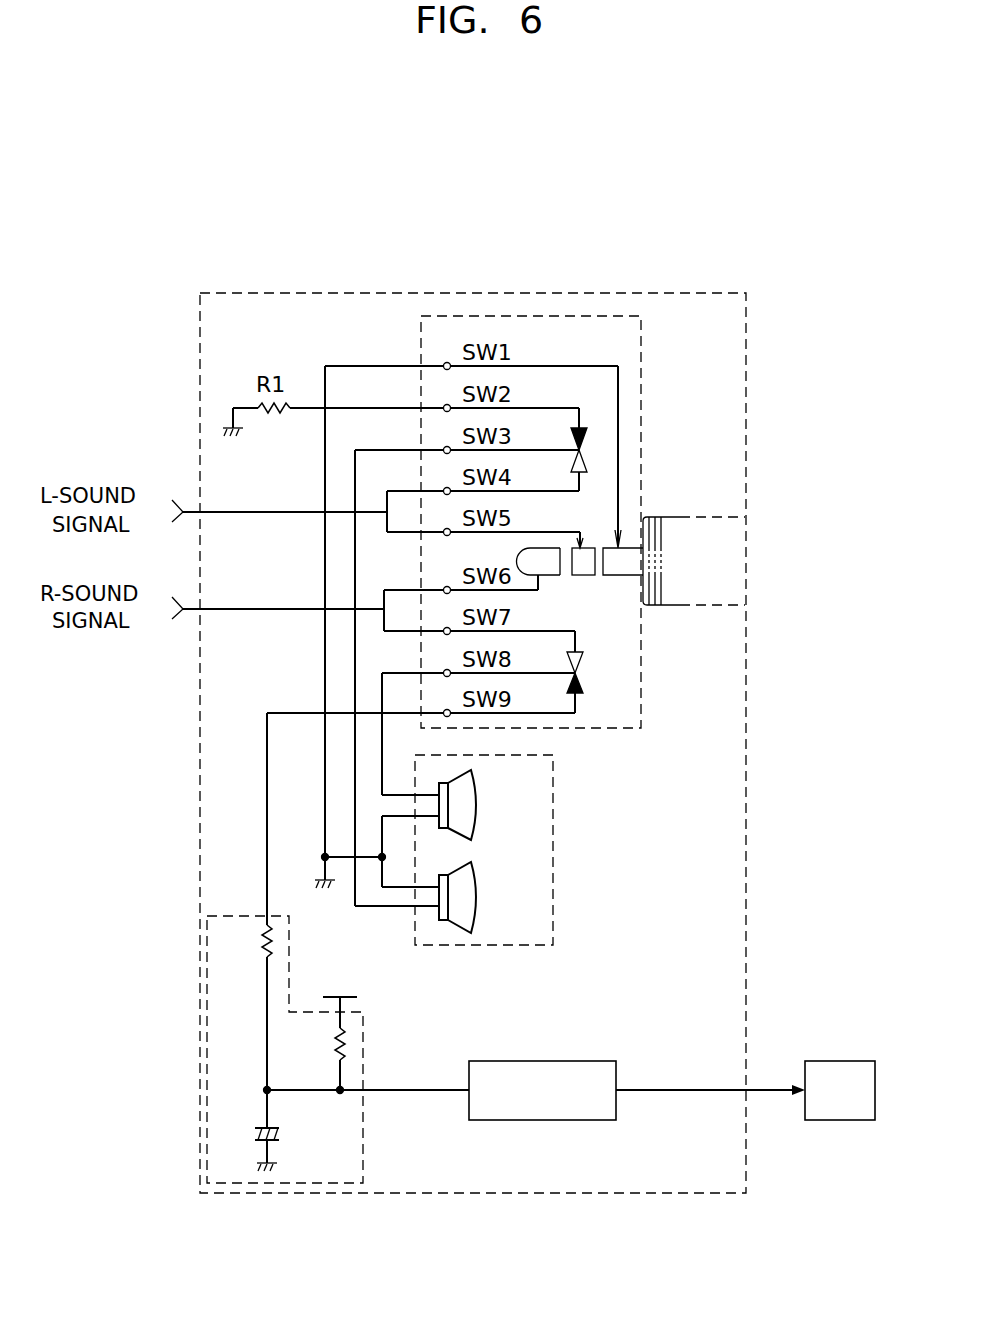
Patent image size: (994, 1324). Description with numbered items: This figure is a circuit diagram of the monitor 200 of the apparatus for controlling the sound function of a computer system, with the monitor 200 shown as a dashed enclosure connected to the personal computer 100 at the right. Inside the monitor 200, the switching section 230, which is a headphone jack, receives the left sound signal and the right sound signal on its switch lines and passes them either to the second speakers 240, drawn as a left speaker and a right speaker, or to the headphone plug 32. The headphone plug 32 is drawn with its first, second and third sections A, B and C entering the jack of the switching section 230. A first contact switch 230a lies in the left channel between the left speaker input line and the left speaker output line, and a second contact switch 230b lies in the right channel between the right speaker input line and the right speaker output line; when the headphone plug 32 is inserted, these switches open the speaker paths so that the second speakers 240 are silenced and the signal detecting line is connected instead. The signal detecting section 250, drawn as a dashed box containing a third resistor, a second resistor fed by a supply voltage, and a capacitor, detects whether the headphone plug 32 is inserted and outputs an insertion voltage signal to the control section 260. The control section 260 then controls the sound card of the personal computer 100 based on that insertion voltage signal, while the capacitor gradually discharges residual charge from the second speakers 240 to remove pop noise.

The PC (personal computer) 100 is at (841, 1050).
The monitor 200 is at (512, 289).
The switching section 230 is at (641, 433).
The first contact switch 230a is at (580, 450).
The second contact switch 230b is at (576, 673).
The headphone plug 32 is at (583, 576).
The second speakers 240 is at (553, 858).
The signal detecting section 250 is at (287, 1184).
The control section 260 is at (546, 1060).